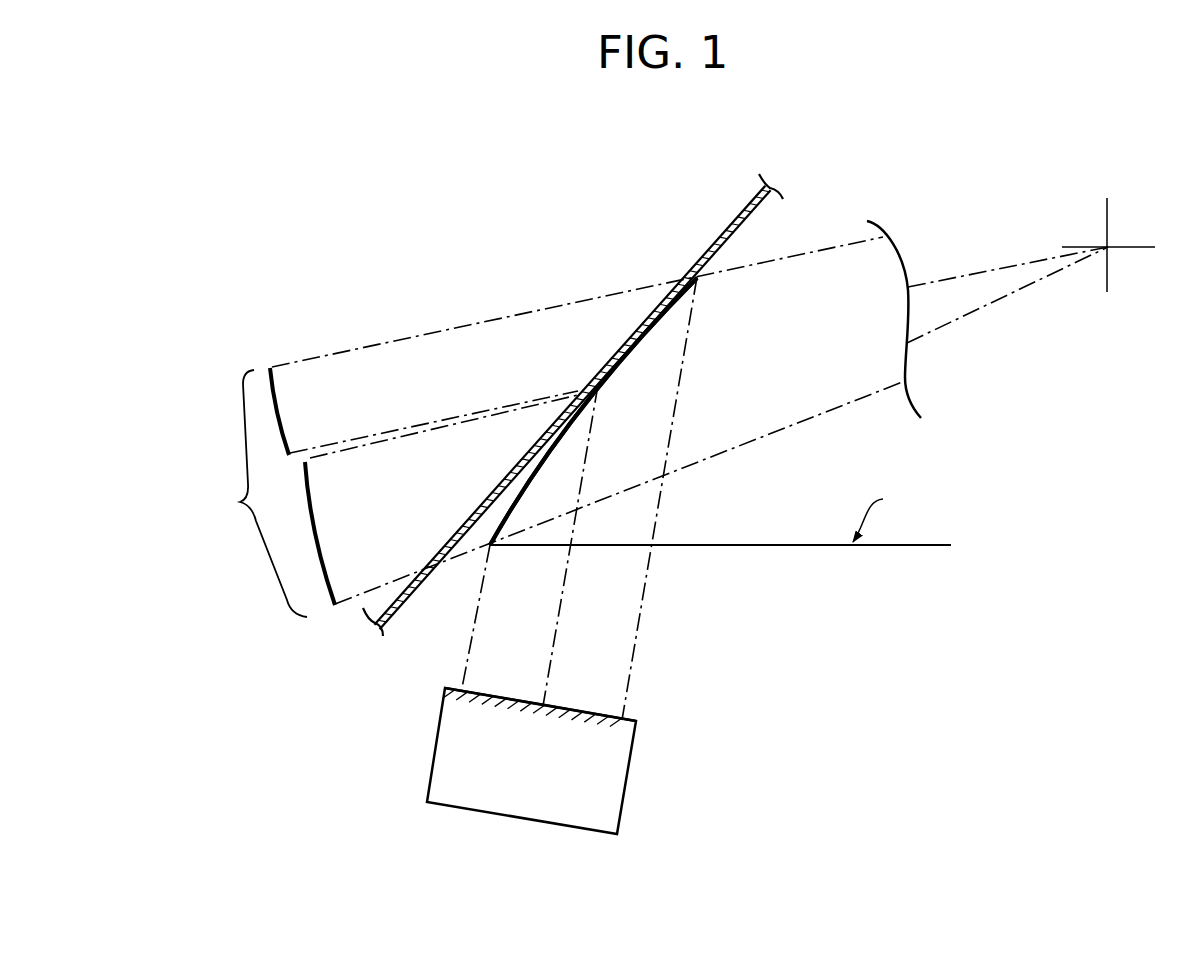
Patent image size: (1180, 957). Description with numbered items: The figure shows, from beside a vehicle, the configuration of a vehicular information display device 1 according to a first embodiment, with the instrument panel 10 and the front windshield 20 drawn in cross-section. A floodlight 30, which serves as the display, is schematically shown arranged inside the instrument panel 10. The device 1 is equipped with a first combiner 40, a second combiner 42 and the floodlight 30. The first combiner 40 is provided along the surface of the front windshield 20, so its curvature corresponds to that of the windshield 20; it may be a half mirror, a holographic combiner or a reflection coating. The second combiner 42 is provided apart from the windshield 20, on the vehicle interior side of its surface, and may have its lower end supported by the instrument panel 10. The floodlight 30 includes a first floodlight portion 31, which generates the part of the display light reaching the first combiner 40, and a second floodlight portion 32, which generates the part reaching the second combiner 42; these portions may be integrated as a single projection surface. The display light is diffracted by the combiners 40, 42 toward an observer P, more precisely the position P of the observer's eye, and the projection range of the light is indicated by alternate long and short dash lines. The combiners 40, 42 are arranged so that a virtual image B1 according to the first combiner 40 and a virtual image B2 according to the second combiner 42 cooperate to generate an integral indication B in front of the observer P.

The vehicular information display device 1 is at (766, 502).
The instrument panel 10 is at (817, 546).
The front windshield 20 is at (609, 360).
The floodlight 30 is at (656, 720).
The first floodlight portion 31 is at (589, 708).
The second floodlight portion 32 is at (498, 692).
The first combiner 40 is at (639, 347).
The second combiner 42 is at (526, 485).
The integral indication B is at (262, 493).
The virtual image according to the first combiner B1 is at (281, 403).
The virtual image according to the second combiner B2 is at (316, 527).
The observer P is at (1110, 247).